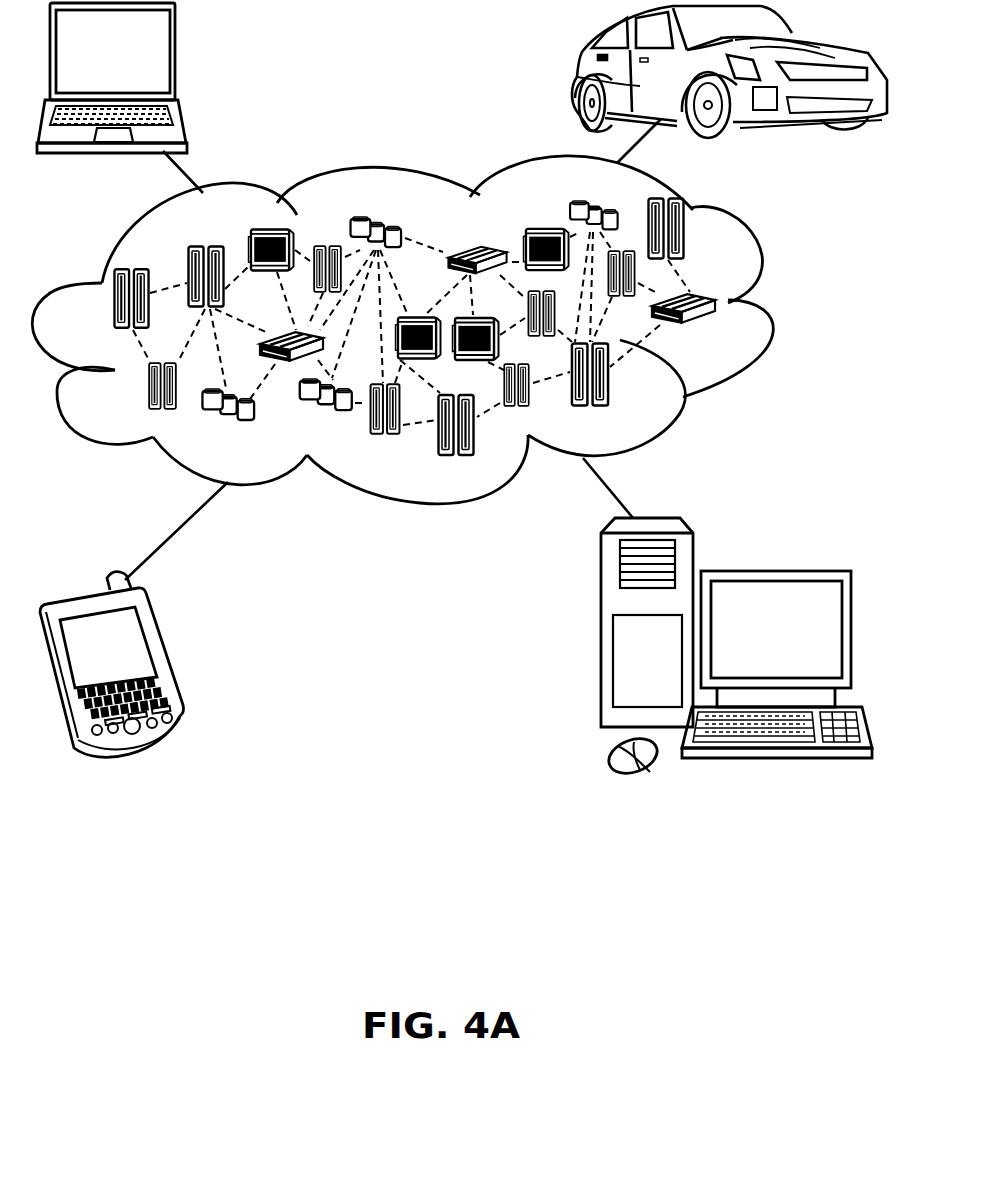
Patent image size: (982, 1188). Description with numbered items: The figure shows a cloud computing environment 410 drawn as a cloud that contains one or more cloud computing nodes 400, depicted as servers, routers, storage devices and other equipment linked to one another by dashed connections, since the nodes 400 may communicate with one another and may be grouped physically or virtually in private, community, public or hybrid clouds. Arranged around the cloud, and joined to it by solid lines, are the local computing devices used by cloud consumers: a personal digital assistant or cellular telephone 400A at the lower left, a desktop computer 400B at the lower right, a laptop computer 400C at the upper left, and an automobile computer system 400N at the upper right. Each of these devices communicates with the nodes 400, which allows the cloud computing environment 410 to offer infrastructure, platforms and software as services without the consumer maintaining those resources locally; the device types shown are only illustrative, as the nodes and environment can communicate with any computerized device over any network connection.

The cloud computing nodes 400 is at (727, 337).
The cloud computing environment 410 is at (773, 310).
The personal digital assistant (PDA) or cellular telephone 400A is at (166, 657).
The desktop computer 400B is at (773, 572).
The laptop computer 400C is at (177, 58).
The automobile computer system 400N is at (576, 72).